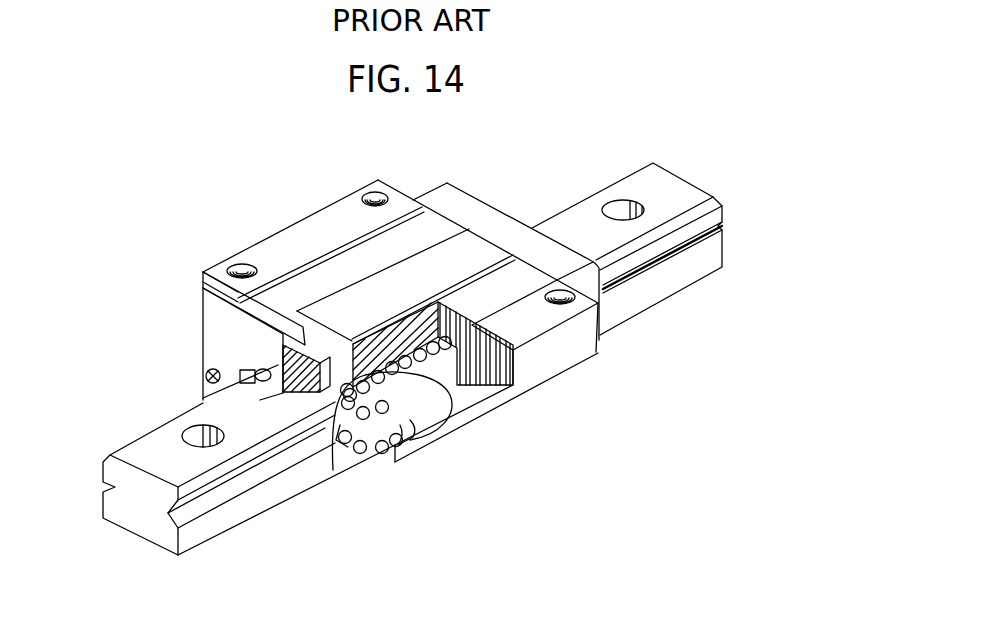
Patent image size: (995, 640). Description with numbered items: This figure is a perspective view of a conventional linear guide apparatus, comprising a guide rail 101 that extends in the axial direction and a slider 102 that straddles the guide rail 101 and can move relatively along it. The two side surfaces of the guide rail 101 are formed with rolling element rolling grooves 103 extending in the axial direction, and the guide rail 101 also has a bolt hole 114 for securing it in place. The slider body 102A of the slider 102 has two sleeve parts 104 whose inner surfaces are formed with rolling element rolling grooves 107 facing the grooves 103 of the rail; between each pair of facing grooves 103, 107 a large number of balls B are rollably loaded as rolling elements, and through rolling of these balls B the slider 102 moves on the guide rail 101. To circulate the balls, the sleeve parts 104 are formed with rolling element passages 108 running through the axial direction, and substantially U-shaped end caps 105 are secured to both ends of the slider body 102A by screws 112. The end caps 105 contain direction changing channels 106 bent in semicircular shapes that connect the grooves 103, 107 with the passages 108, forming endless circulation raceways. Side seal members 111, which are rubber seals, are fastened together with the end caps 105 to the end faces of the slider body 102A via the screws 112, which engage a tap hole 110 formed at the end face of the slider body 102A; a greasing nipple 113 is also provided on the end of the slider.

The guide rail 101 is at (670, 174).
The slider 102 is at (474, 228).
The slider body 102A is at (367, 248).
The rolling element rolling grooves 103 is at (244, 486).
The sleeve parts 104 is at (307, 235).
The end caps 105 is at (440, 198).
The direction changing channels 106 is at (382, 455).
The rolling element rolling grooves 107 is at (333, 385).
The rolling element passages 108 is at (386, 455).
The tap hole 110 is at (405, 437).
The side seal members 111 is at (523, 222).
The screws 112 is at (206, 379).
The greasing nipple 113 is at (268, 372).
The bolt hole 114 is at (200, 438).
The balls B is at (450, 395).